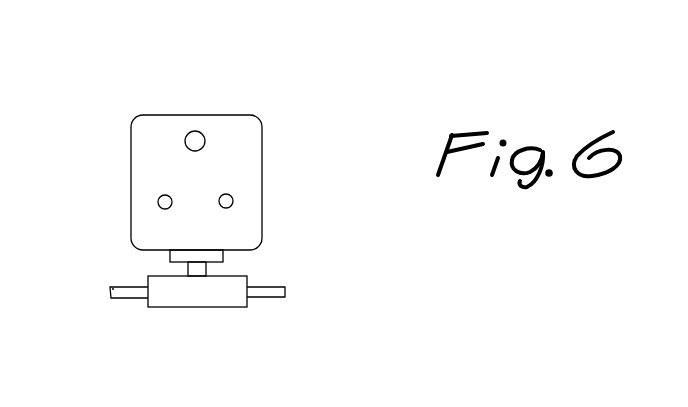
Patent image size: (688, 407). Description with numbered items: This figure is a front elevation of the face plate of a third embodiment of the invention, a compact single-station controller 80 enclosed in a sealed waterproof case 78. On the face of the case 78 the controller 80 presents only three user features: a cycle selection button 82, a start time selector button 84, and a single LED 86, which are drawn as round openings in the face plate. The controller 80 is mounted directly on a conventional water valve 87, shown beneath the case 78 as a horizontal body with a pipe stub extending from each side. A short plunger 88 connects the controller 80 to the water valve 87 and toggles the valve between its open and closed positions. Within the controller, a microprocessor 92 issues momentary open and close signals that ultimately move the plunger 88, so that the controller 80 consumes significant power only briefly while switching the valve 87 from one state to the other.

The sealed waterproof case 78 is at (253, 152).
The single-station controller 80 is at (234, 92).
The cycle selection button 82 is at (158, 207).
The start time selector button 84 is at (233, 200).
The single LED 86 is at (195, 131).
The water valve 87 is at (185, 298).
The plunger 88 is at (205, 268).
The microprocessor 92 is at (561, 400).